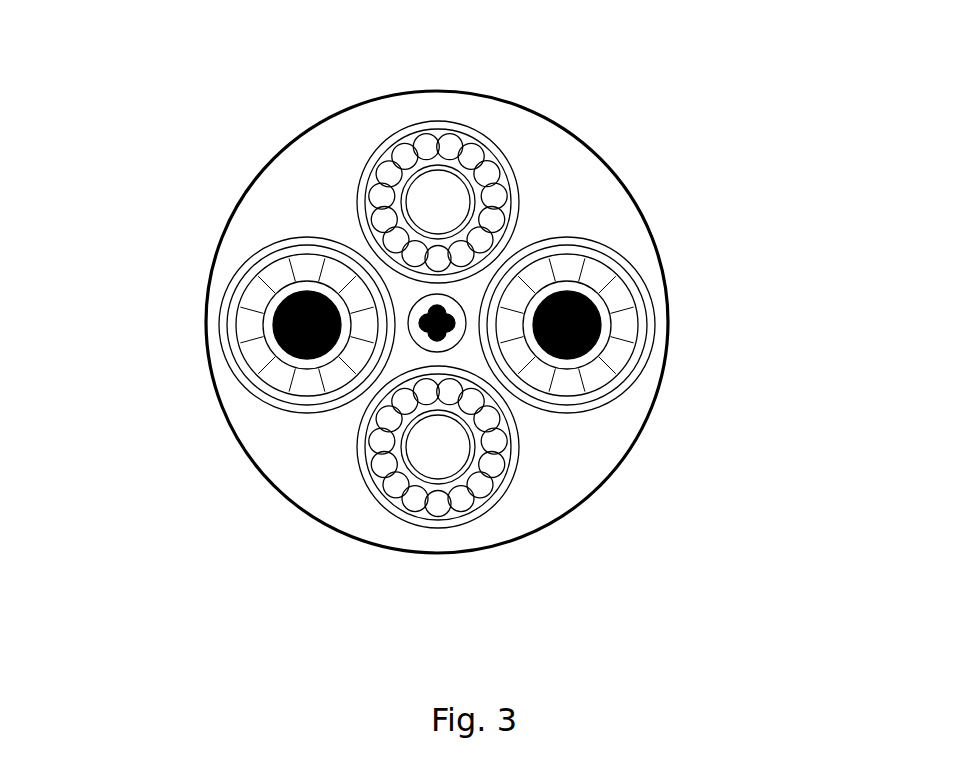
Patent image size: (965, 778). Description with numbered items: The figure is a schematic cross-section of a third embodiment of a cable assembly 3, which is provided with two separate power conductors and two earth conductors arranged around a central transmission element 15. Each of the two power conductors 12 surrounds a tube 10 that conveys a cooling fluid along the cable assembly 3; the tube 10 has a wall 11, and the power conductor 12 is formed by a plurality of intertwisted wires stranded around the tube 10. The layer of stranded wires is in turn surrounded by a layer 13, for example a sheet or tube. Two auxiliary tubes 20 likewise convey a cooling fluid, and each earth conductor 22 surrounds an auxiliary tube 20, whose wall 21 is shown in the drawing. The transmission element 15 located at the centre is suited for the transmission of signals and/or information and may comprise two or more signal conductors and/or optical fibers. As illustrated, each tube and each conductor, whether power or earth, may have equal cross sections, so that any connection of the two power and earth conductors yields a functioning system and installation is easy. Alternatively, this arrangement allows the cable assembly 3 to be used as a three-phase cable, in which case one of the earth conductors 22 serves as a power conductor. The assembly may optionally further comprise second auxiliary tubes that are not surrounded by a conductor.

The cable assembly 3 is at (732, 205).
The tube 10 is at (297, 350).
The wall 11 is at (264, 318).
The power conductor 12 is at (298, 262).
The layer 13 is at (243, 355).
The transmission element 15 is at (452, 310).
The auxiliary tube 20 is at (417, 460).
The wall 21 is at (440, 490).
The earth conductor 22 is at (463, 495).